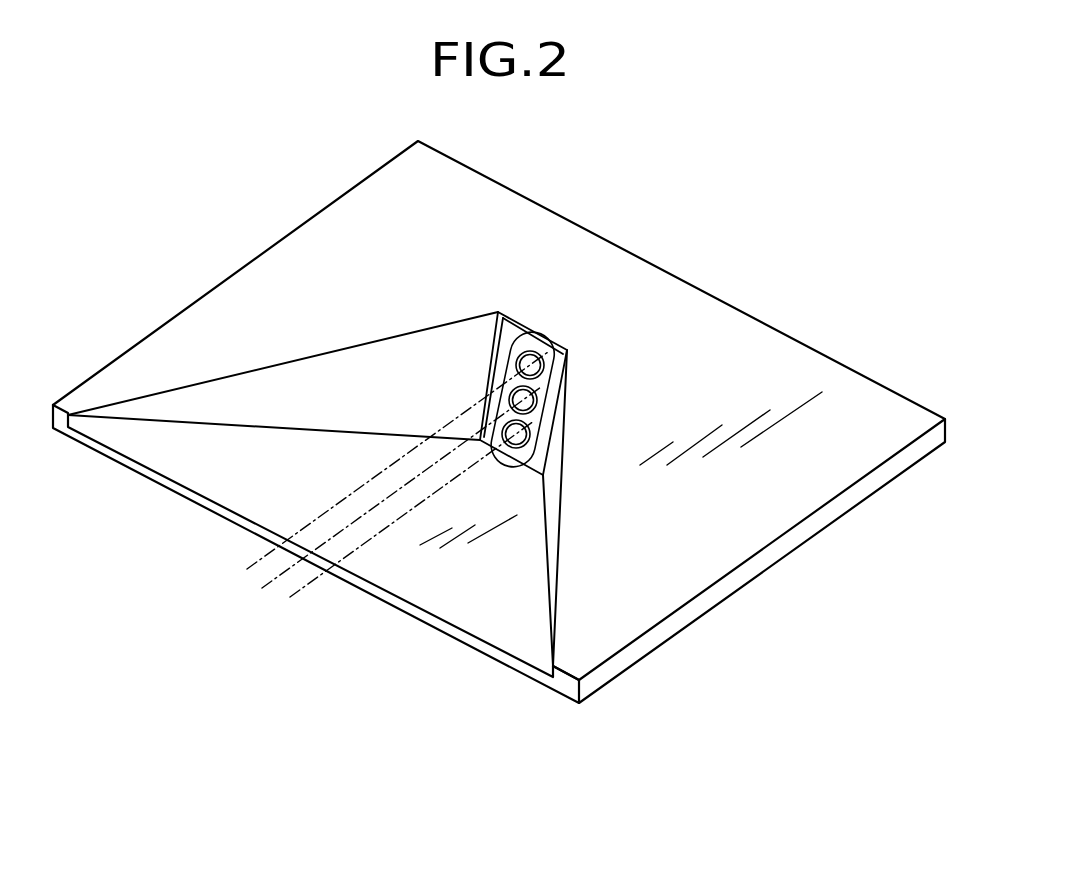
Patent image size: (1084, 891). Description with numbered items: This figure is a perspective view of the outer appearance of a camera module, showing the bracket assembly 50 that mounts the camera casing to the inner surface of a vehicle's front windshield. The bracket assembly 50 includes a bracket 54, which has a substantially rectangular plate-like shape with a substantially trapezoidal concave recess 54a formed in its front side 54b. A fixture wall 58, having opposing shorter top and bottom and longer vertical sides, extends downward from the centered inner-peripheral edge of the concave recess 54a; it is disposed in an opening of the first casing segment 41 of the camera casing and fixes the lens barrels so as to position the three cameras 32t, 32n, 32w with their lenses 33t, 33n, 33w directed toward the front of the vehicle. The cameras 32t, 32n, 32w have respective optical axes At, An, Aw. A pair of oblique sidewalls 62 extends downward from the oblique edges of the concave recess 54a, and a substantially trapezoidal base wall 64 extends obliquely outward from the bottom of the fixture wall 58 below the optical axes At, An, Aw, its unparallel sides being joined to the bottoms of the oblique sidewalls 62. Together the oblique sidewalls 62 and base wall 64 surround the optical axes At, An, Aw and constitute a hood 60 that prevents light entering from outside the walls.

The bracket assembly 50 is at (794, 557).
The bracket 54 is at (655, 560).
The concave recess 54a is at (313, 378).
The front side 54b is at (567, 683).
The fixture wall 58 is at (502, 310).
The first casing segment 41 is at (549, 338).
The camera 32t is at (529, 350).
The lens 33t is at (544, 353).
The camera 32n is at (533, 392).
The lens 33n is at (537, 400).
The camera 32w is at (526, 428).
The lens 33w is at (530, 441).
The hood 60 is at (250, 508).
The oblique sidewalls 62 is at (230, 402).
The base wall 64 is at (405, 594).
The optical axis At is at (240, 572).
The optical axis An is at (258, 590).
The optical axis Aw is at (288, 602).